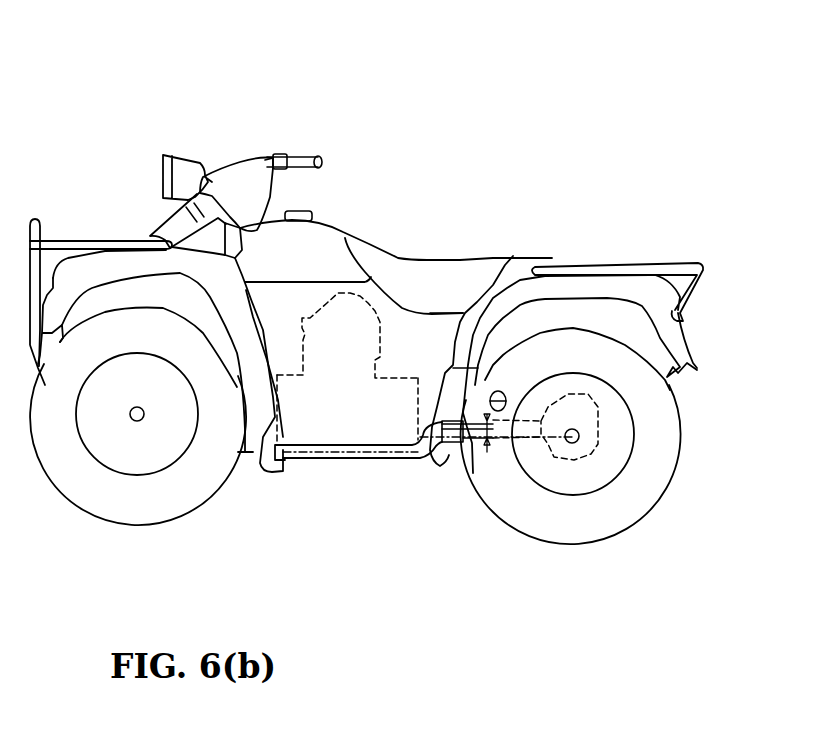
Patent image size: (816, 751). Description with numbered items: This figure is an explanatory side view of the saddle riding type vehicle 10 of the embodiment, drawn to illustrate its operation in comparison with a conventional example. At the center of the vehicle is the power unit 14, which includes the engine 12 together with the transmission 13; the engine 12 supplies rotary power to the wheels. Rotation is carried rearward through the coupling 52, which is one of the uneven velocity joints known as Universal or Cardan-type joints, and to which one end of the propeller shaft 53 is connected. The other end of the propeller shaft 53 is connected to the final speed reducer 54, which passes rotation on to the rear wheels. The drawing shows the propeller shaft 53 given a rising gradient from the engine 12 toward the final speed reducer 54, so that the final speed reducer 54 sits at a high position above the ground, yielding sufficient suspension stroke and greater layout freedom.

The saddle riding type vehicle 10 is at (160, 68).
The engine 12 is at (362, 298).
The transmission 13 is at (442, 426).
The power unit 14 is at (540, 146).
The coupling 52 is at (426, 460).
The propeller shaft 53 is at (495, 438).
The final speed reducer 54 is at (577, 460).